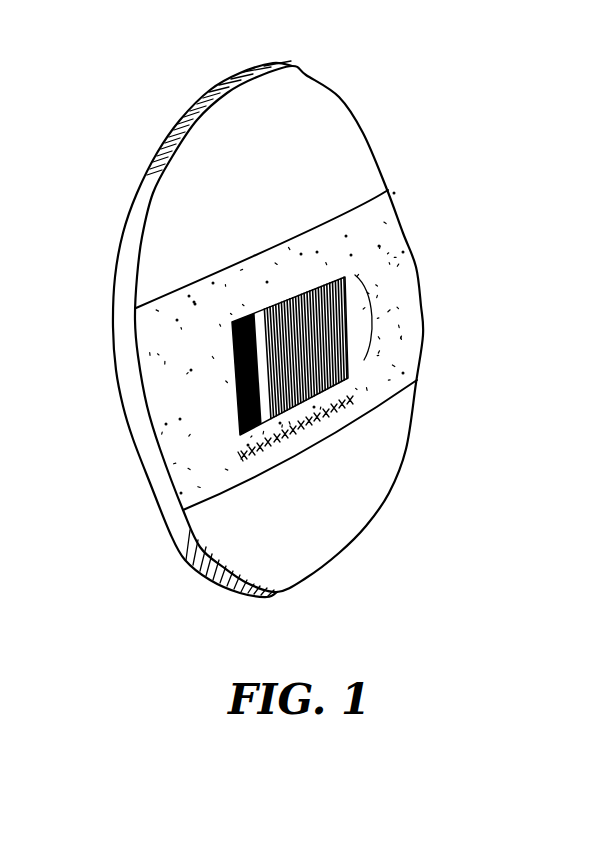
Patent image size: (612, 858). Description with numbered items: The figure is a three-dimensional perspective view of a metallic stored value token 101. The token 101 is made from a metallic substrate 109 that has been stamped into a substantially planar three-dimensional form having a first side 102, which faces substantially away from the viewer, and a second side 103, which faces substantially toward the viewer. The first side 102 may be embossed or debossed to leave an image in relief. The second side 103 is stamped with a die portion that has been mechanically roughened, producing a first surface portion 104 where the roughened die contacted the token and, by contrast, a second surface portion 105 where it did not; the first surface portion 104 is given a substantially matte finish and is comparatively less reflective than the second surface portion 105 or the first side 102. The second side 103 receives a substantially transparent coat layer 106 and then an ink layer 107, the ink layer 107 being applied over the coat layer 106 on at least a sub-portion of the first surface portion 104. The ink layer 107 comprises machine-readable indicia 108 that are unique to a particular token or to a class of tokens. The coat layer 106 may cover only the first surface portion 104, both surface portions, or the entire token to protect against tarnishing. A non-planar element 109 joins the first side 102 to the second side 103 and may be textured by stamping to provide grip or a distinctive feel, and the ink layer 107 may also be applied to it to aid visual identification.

The metallic stored value token 101 is at (299, 58).
The first side 102 is at (95, 235).
The second side 103 is at (379, 166).
The first surface portion 104 is at (410, 363).
The second surface portion 105 is at (398, 459).
The substantially transparent coat layer 106 is at (388, 211).
The ink layer 107 is at (340, 400).
The machine-readable indicia 108 is at (244, 460).
The metallic substrate / non-planar element 109 is at (161, 166).